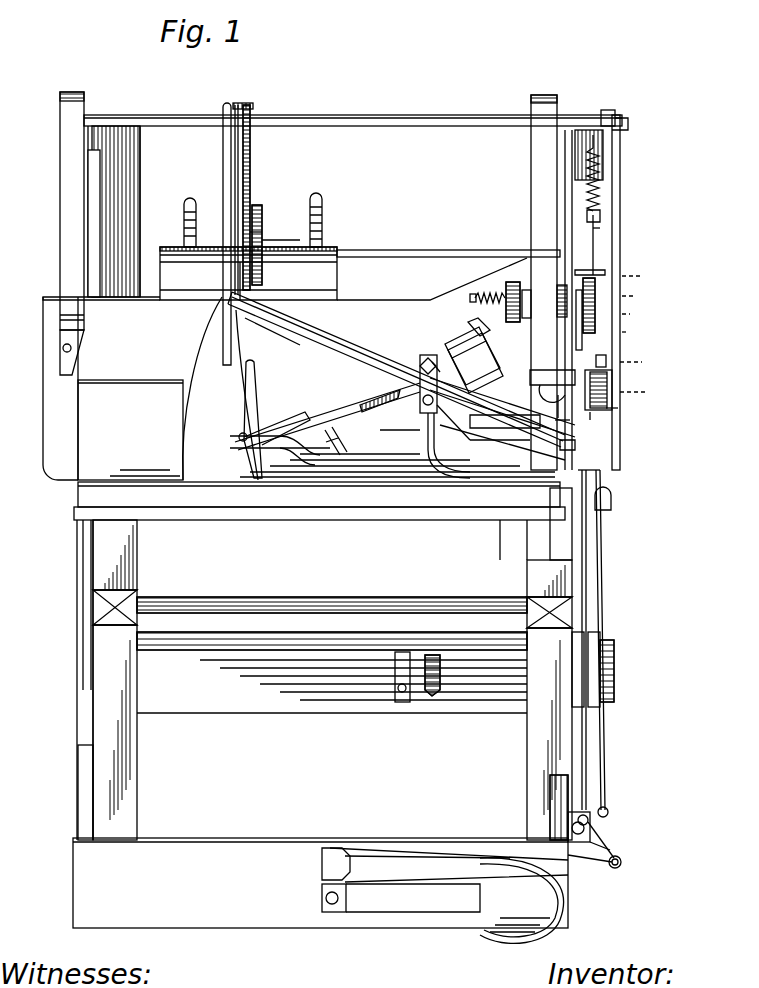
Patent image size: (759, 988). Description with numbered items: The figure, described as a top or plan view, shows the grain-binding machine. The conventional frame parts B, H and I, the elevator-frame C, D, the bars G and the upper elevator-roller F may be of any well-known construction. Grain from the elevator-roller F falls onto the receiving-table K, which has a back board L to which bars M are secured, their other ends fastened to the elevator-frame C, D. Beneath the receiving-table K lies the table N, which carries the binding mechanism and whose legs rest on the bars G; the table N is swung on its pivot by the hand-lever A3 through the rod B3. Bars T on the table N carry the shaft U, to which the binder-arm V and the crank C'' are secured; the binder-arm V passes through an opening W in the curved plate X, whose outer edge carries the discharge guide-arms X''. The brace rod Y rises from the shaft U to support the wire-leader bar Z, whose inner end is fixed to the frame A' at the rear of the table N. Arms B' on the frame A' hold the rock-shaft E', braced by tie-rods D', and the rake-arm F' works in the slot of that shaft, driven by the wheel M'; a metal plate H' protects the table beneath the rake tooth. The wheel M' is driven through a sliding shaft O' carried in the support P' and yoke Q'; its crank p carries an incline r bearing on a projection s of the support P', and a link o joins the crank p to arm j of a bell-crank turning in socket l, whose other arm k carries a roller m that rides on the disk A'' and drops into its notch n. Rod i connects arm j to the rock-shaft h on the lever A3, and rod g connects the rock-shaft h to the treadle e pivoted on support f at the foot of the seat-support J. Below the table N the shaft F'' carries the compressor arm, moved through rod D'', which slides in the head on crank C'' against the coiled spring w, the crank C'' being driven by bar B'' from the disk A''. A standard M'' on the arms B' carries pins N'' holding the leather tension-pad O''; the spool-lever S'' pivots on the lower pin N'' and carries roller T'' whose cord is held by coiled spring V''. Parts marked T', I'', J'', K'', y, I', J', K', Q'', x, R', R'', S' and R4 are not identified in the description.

The post T' is at (243, 419).
The shaft U is at (353, 110).
The brace rod Y is at (222, 175).
The binder-arm V is at (249, 199).
The bars T is at (544, 282).
The arms X'' is at (264, 220).
The ratchet I'' is at (265, 243).
The pin y is at (262, 228).
The arm K'' is at (281, 232).
The opening W is at (248, 273).
The plate X is at (415, 279).
The plate J'' is at (259, 281).
The shaft F'' is at (448, 242).
The table N is at (101, 388).
The receiving-table K is at (130, 430).
The metal plate H' is at (220, 388).
The arm I' is at (274, 419).
The rod J' is at (327, 416).
The clamp K' is at (347, 441).
The rake-arm F' is at (275, 452).
The bar Q'' is at (396, 369).
The bar Z is at (273, 343).
The back board L is at (319, 414).
The spindles or pins N'' is at (468, 364).
The tie-rods D' is at (421, 347).
The leather backing O'' is at (474, 360).
The elevator-frame C is at (332, 579).
The wheel M' is at (502, 403).
The arms B' is at (507, 407).
The standard M'' is at (453, 422).
The lever S'' is at (505, 433).
The rod D'' is at (507, 339).
The shaft O' is at (487, 292).
The yoke Q' is at (519, 297).
The support P' is at (544, 297).
The frame A' is at (552, 376).
The roller T'' is at (554, 405).
The coiled spring V'' is at (558, 413).
The bar B'' is at (602, 292).
The crank C'' is at (624, 119).
The coiled spring w is at (599, 173).
The pin x is at (603, 228).
The rock-shaft E' is at (592, 261).
The gear R' is at (578, 419).
The bar R'' is at (593, 320).
The notch n is at (604, 362).
The crank p is at (637, 275).
The incline r is at (634, 294).
The projection s is at (631, 312).
The link o is at (628, 330).
The bell-crank arm j is at (634, 358).
The disk A'' is at (614, 402).
The bell-crank arm k is at (637, 392).
The anti-friction roller m is at (618, 406).
The socket l is at (592, 420).
The rod i is at (596, 633).
The rod B3 is at (597, 620).
The bars M is at (277, 680).
The elevator-frame D is at (332, 574).
The upper elevator-roller F is at (332, 623).
The machine part B is at (332, 688).
The piece S' is at (459, 685).
The pulley block R4 is at (593, 677).
The bars G is at (321, 786).
The machine part H is at (320, 883).
The treadle e is at (336, 864).
The rod g is at (449, 865).
The support f is at (324, 898).
The seat-support J is at (413, 898).
The machine part I is at (521, 901).
The rock-shaft h is at (594, 840).
The hand-lever A3 is at (612, 850).